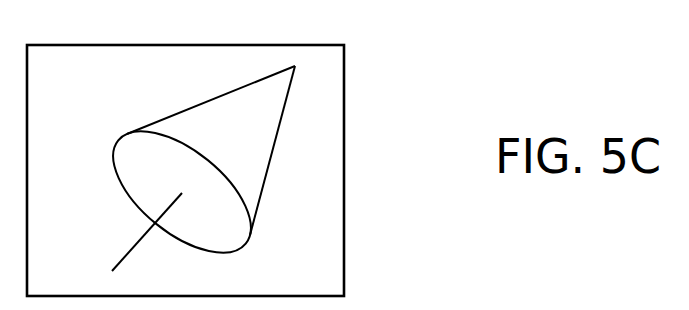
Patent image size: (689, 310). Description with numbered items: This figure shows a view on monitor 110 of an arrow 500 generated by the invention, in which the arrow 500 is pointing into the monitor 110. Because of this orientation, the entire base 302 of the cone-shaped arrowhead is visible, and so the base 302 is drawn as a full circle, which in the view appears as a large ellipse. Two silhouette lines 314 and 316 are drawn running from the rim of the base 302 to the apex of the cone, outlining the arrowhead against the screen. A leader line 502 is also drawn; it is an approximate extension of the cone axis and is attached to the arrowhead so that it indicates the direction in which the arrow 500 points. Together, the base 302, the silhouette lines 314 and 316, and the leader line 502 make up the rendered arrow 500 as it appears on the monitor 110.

The monitor 110 is at (273, 44).
The arrow 500 is at (117, 95).
The base 302 is at (125, 187).
The silhouette line 314 is at (208, 98).
The silhouette line 316 is at (277, 145).
The leader line 502 is at (135, 245).